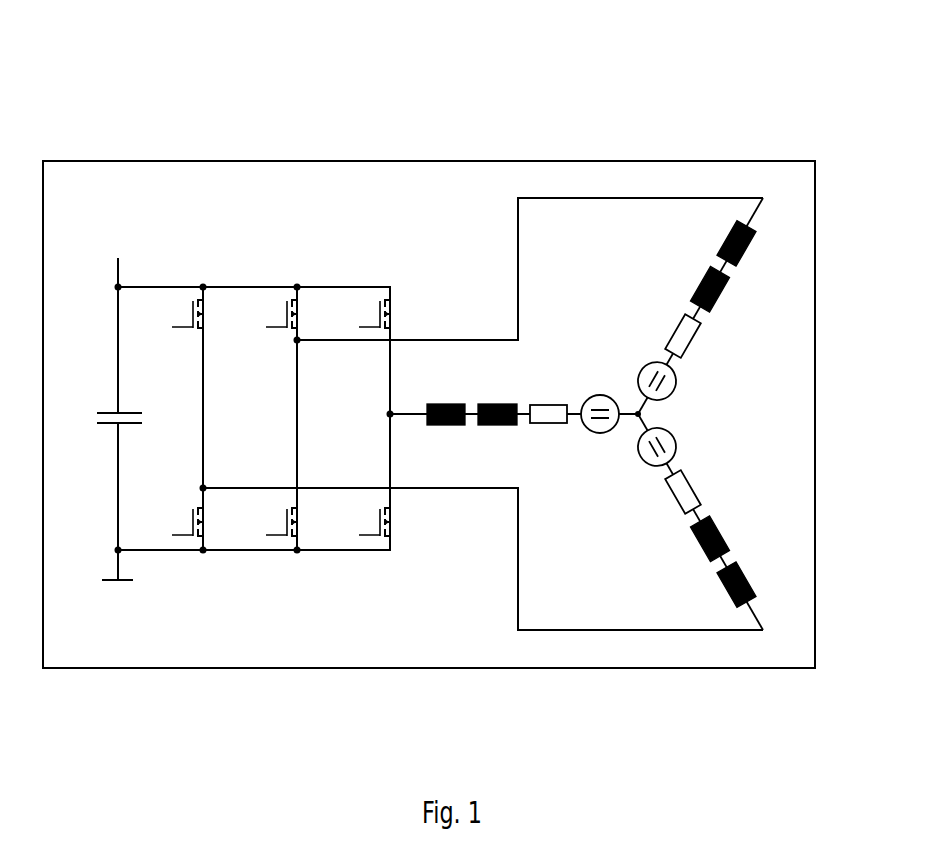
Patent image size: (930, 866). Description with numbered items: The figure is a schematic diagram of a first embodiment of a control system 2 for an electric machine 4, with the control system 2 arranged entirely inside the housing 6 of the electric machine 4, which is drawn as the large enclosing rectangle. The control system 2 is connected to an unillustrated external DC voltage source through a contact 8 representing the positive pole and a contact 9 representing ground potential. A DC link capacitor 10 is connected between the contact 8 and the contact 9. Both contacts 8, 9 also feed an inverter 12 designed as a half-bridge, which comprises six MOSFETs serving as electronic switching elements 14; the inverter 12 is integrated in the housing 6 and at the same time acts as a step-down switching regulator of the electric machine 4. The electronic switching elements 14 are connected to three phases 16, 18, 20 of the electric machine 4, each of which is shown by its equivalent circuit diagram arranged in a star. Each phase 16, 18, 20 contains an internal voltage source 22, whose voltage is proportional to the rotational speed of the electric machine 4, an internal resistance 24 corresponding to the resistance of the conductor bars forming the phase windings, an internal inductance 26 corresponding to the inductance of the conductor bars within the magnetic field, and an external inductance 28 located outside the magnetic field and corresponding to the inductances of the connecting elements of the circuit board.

The control system 2 is at (360, 208).
The electric machine 4 is at (703, 129).
The housing 6 is at (440, 160).
The contact 8 is at (146, 243).
The contact 9 is at (150, 603).
The DC link capacitor 10 is at (142, 419).
The inverter 12 is at (297, 276).
The electronic switching element 14 is at (203, 313).
The phase 16 is at (525, 440).
The phase 18 is at (680, 293).
The phase 20 is at (730, 506).
The internal voltage source 22 is at (598, 395).
The internal resistance 24 is at (548, 405).
The internal inductance 26 is at (497, 404).
The external inductance 28 is at (446, 404).